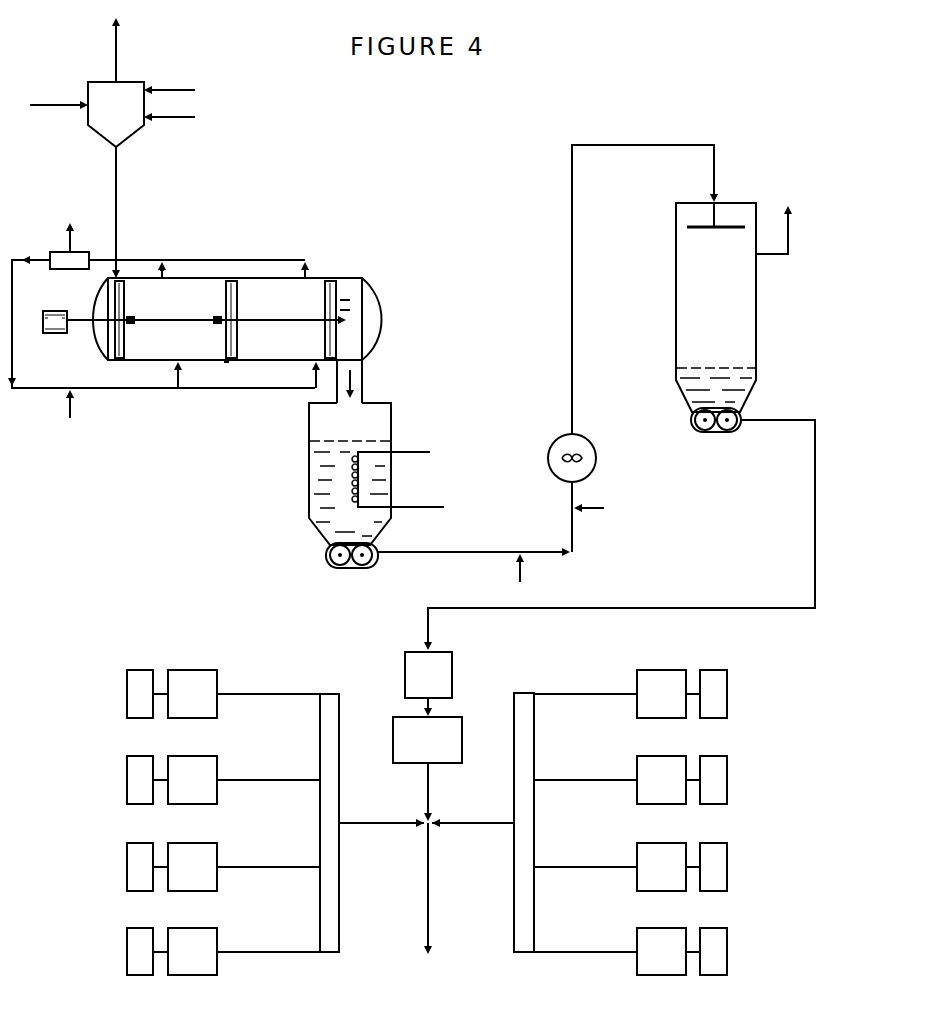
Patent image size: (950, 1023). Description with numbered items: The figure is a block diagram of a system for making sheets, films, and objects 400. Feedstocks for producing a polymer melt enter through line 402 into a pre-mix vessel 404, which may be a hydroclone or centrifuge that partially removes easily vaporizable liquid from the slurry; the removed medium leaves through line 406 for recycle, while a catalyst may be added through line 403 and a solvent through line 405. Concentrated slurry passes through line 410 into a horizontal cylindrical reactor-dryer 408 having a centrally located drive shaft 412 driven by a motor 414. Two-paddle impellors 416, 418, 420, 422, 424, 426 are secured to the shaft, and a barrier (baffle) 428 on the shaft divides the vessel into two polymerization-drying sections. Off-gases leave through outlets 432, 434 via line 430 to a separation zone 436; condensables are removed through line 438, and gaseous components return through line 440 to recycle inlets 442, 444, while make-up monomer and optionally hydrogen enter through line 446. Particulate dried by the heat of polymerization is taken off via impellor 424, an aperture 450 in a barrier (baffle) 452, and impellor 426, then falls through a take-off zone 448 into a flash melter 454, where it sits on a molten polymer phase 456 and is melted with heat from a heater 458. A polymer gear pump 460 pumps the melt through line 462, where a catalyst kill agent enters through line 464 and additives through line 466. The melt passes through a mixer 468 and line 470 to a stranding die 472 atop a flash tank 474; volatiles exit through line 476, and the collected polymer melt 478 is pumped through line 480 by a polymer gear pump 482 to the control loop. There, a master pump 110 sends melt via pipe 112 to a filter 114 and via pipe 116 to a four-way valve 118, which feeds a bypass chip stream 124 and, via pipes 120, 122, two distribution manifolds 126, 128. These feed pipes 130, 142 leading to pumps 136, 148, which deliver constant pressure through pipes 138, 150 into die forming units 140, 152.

The system for making sheets, films, and objects 400 is at (580, 76).
The line 402 is at (60, 86).
The line 403 is at (191, 90).
The pre-mix vessel 404 is at (134, 115).
The line 405 is at (191, 117).
The line 406 is at (118, 58).
The reactor-dryer 408 is at (193, 305).
The line 410 is at (118, 192).
The drive shaft 412 is at (84, 306).
The motor 414 is at (62, 335).
The paddle impellor 416 is at (121, 368).
The paddle impellor 418 is at (134, 324).
The paddle impellor 420 is at (216, 314).
The paddle impellor 422 is at (238, 362).
The paddle impellor 424 is at (328, 280).
The paddle impellor 426 is at (346, 316).
The barrier (baffle) 428 is at (226, 362).
The line 430 is at (148, 258).
The outlet 432 is at (170, 270).
The outlet 434 is at (305, 270).
The separation zone 436 is at (70, 270).
The line 438 is at (76, 250).
The line 440 is at (34, 258).
The recycle inlet 442 is at (178, 385).
The recycle inlet 444 is at (312, 380).
The line 446 is at (66, 410).
The take-off zone 448 is at (352, 338).
The aperture 450 is at (342, 300).
The barrier (baffle) 452 is at (346, 306).
The flash melter 454 is at (370, 431).
The molten polymer phase 456 is at (312, 481).
The heater 458 is at (426, 507).
The polymer gear pump 460 is at (325, 556).
The line 462 is at (480, 543).
The line 464 is at (540, 573).
The line 466 is at (594, 512).
The mixer 468 is at (596, 458).
The line 470 is at (570, 290).
The stranding die 472 is at (732, 226).
The flash tank 474 is at (734, 298).
The line 476 is at (789, 236).
The polymer melt 478 is at (758, 396).
The line 480 is at (806, 420).
The polymer gear pump 482 is at (690, 420).
The master pump 110 is at (404, 673).
The pipe 112 is at (432, 702).
The filter 114 is at (463, 738).
The pipe 116 is at (426, 793).
The valve 118 is at (418, 830).
The pipe 120 is at (472, 825).
The pipe 122 is at (362, 825).
The bypass chip stream 124 is at (430, 883).
The distribution manifold 126 is at (330, 954).
The distribution manifold 128 is at (520, 954).
The pipe 130 is at (300, 692).
The pump 136 is at (192, 668).
The pipe 138 is at (160, 690).
The die forming unit 140 is at (142, 668).
The pipe 142 is at (542, 692).
The pump 148 is at (660, 668).
The pipe 150 is at (694, 690).
The die forming unit 152 is at (715, 668).